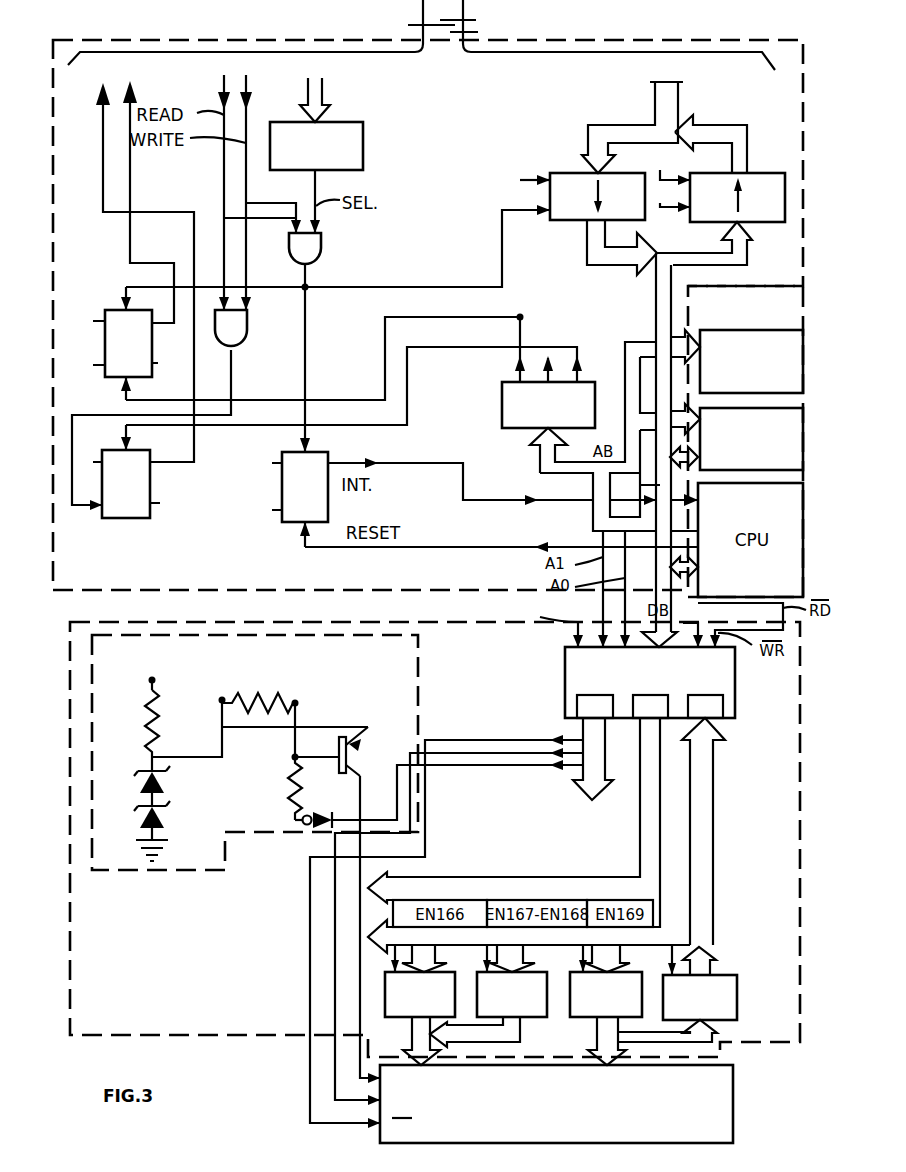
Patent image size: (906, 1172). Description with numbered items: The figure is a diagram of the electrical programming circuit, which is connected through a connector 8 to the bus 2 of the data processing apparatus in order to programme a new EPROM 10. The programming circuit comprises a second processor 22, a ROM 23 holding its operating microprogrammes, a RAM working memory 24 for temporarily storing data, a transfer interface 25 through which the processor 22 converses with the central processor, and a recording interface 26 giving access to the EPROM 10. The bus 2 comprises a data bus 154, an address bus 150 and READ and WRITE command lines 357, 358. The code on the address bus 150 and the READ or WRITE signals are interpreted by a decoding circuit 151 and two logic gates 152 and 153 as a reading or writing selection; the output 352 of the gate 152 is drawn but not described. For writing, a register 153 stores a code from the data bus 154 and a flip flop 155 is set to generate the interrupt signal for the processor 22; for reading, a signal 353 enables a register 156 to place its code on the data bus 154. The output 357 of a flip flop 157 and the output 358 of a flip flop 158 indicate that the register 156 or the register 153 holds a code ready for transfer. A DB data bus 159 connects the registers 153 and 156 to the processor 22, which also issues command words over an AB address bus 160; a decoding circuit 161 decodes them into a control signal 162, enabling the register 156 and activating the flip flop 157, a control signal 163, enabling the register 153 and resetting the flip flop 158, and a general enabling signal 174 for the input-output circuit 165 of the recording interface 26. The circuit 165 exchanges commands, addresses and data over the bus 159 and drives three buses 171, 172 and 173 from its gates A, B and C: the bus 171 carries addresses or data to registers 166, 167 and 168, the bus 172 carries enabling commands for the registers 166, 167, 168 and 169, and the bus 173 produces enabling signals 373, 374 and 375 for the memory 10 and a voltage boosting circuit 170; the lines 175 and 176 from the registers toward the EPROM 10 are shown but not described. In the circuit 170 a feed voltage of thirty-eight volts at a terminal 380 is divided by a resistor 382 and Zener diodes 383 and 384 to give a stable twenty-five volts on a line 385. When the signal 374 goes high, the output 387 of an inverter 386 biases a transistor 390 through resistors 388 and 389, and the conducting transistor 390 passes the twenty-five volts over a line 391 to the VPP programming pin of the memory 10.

The bus 2 is at (455, 30).
The connector 8 is at (412, 33).
The new EPROM 10 is at (733, 1105).
The second processor 22 is at (768, 597).
The ROM 23 is at (797, 438).
The RAM working memory 24 is at (722, 330).
The transfer interface 25 is at (318, 594).
The recording interface 26 is at (188, 1040).
The address bus 150 is at (320, 100).
The decoding circuit 151 is at (363, 141).
The logic gate 152 is at (322, 250).
The register 153 is at (246, 330).
The data bus 154 is at (662, 97).
The flip flop 155 is at (297, 507).
The register 156 is at (768, 222).
The flip flop 157 is at (124, 518).
The flip flop 158 is at (147, 357).
The DB data bus 159 is at (634, 437).
The AB address bus 160 is at (597, 508).
The decoding circuit 161 is at (502, 392).
The control signal 162 is at (579, 368).
The control signal 163 is at (516, 369).
The programmable input-output circuit 165 is at (725, 680).
The register 166 is at (420, 981).
The register 167 is at (488, 996).
The register 168 is at (606, 981).
The register 169 is at (677, 994).
The voltage boosting circuit 170 is at (145, 897).
The bus 171 is at (708, 828).
The bus 172 is at (645, 835).
The bus 173 is at (592, 801).
The general enabling signal 174 is at (549, 356).
The VPP output line 175 is at (412, 1052).
The output line 176 is at (600, 1048).
The gate output line 352 is at (368, 287).
The signal 353 is at (232, 392).
The flip flop output 357 is at (103, 193).
The flip flop output 358 is at (133, 173).
The enabling signal 373 is at (527, 740).
The enabling signal 374 is at (503, 800).
The enabling signal 375 is at (457, 791).
The terminal 380 is at (158, 680).
The resistor 382 is at (162, 715).
The Zener diode 383 is at (166, 784).
The Zener diode 384 is at (166, 818).
The line 385 is at (222, 740).
The inverter 386 is at (313, 814).
The inverter output 387 is at (295, 817).
The resistor 388 is at (258, 694).
The resistor 389 is at (295, 763).
The transistor 390 is at (380, 744).
The line 391 is at (358, 1020).